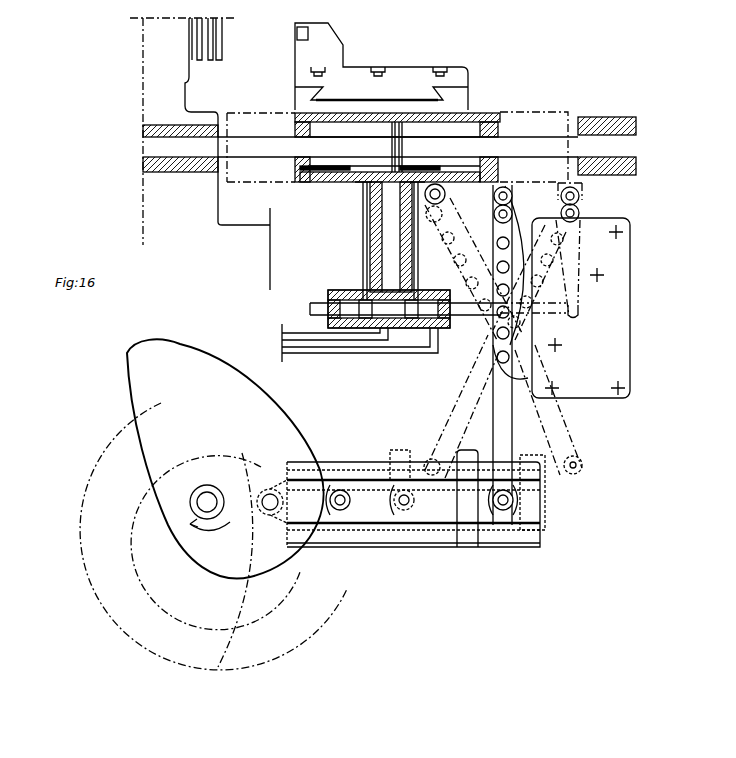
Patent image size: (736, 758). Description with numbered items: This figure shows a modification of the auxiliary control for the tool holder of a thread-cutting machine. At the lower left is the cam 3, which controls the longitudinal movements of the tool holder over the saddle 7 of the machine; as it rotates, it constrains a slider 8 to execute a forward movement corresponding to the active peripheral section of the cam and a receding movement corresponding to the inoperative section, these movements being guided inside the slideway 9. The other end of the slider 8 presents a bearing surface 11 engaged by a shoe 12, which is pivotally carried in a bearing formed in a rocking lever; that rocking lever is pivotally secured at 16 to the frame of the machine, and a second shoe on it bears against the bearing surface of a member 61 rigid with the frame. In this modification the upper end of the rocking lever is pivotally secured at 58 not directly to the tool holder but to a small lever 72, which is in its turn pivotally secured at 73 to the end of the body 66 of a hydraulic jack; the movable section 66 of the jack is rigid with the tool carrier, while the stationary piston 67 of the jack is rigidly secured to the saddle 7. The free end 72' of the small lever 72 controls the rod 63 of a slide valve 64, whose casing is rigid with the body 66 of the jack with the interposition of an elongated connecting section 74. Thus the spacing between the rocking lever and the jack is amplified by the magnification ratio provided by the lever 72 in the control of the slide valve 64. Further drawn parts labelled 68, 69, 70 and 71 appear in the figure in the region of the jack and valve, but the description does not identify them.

The cam 3 is at (295, 420).
The saddle 7 is at (197, 118).
The slider 8 is at (440, 515).
The slideway 9 is at (362, 470).
The bearing surface 11 is at (473, 500).
The shoe 12 is at (487, 512).
The pivot of rocking lever 16 is at (460, 96).
The pivot 58 is at (512, 213).
The member rigid with the frame 61 is at (625, 277).
The rod 63 is at (476, 311).
The slide valve 64 is at (365, 323).
The movable section of hydraulic jack 66 is at (500, 120).
The stationary piston 67 is at (402, 146).
The pipe 68 is at (328, 350).
The plate 69 is at (340, 180).
The roller 70 is at (446, 195).
The pipe 71 is at (300, 338).
The small lever 72 is at (581, 261).
The free end of small lever 72' is at (591, 308).
The pivot of small lever 73 is at (512, 196).
The elongated connecting section 74 is at (377, 237).